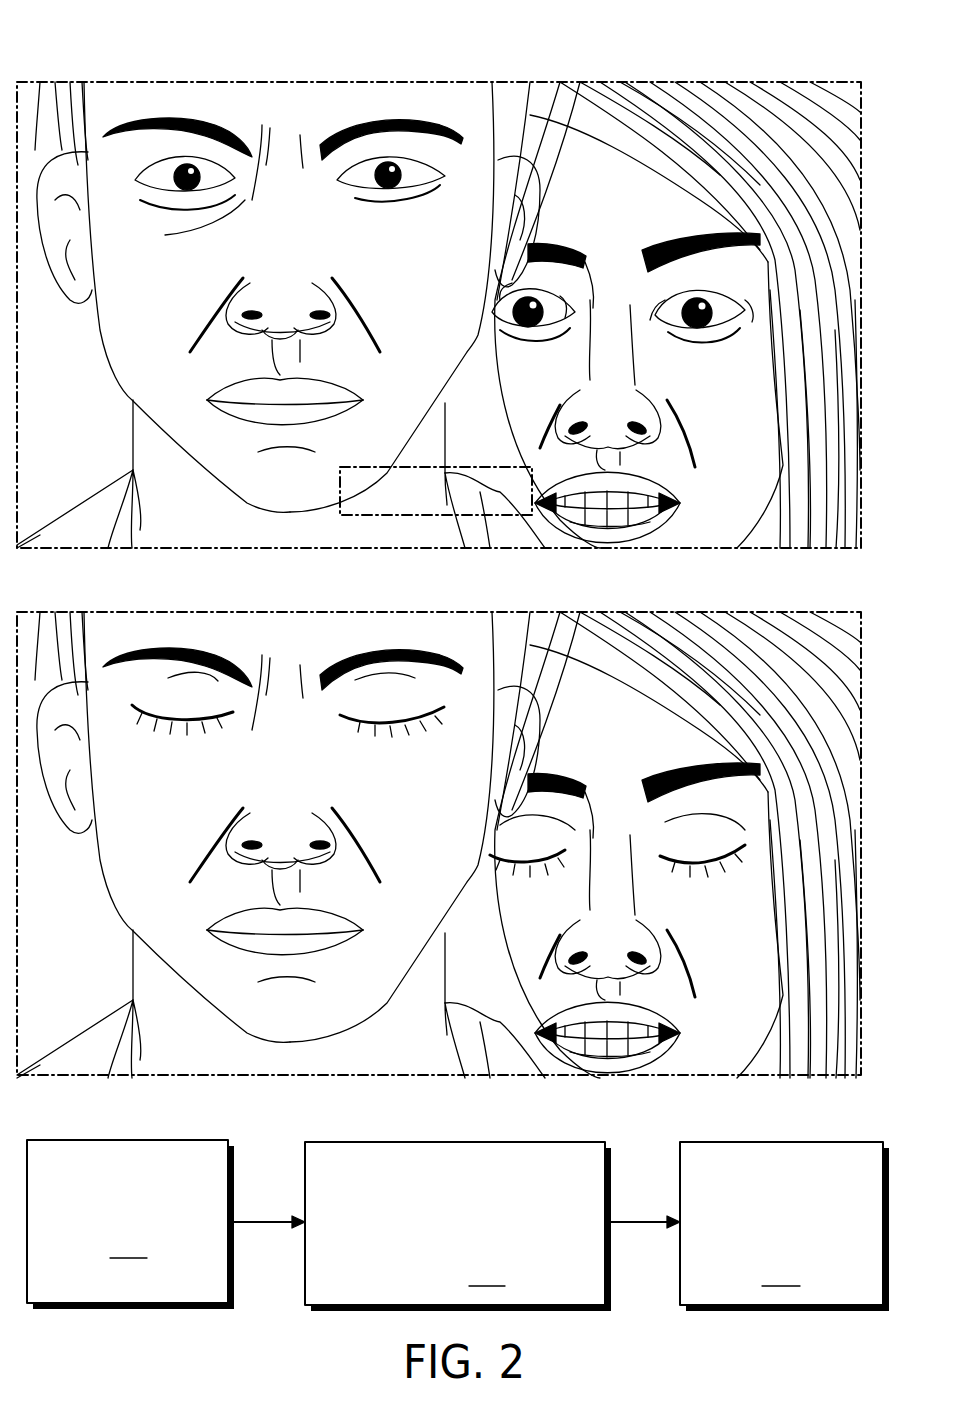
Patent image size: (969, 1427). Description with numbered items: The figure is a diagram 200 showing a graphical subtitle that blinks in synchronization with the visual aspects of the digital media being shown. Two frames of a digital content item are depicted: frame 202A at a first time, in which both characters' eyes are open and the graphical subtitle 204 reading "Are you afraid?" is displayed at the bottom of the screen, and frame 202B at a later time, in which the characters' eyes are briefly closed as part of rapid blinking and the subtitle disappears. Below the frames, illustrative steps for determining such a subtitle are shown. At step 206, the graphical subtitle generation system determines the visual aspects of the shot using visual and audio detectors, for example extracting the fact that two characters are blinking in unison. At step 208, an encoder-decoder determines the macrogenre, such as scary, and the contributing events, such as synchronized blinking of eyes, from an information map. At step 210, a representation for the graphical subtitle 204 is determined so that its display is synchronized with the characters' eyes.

The diagram 200 is at (157, 55).
The frame 202A is at (729, 82).
The frame 202B is at (729, 612).
The graphical subtitle 204 is at (437, 515).
The step of determining visual aspects of a shot 206 is at (130, 1224).
The step of determining macrogenre and contributing events 208 is at (458, 1226).
The step of determining a representation for a graphical subtitle 210 is at (784, 1226).